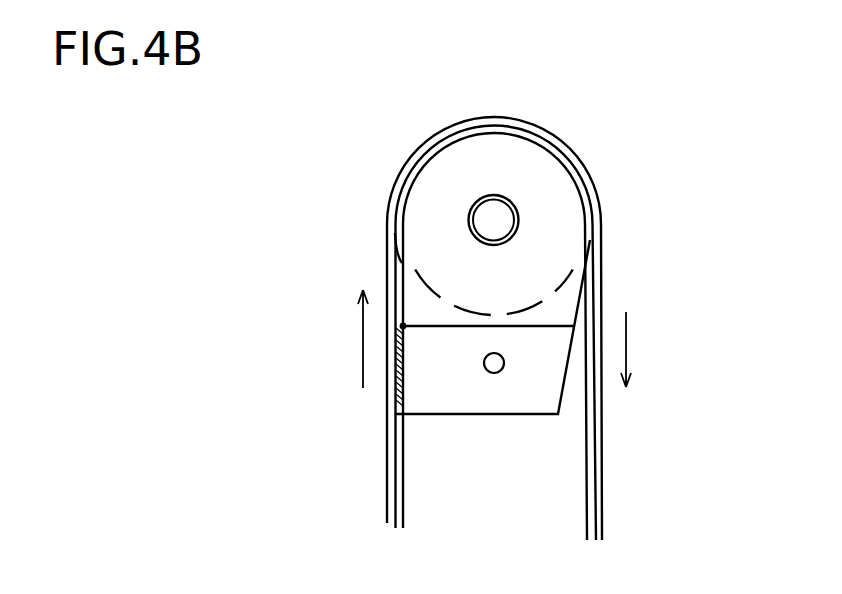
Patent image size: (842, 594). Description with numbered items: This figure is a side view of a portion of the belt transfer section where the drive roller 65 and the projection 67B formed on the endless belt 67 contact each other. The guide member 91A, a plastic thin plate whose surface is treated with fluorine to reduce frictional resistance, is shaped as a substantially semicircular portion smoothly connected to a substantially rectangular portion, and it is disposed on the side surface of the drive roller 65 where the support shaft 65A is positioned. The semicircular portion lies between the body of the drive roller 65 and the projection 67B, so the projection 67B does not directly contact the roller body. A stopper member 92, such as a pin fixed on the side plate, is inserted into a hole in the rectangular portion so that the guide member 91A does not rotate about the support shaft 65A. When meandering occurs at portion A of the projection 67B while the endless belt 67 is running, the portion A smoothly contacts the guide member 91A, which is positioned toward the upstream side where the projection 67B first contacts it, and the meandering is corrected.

The guide member 91A is at (493, 153).
The support shaft 65A is at (492, 220).
The drive roller 65 is at (603, 301).
The endless belt 67 is at (602, 479).
The projection 67B is at (403, 471).
The stopper member 92 is at (493, 373).
The portion A is at (392, 385).